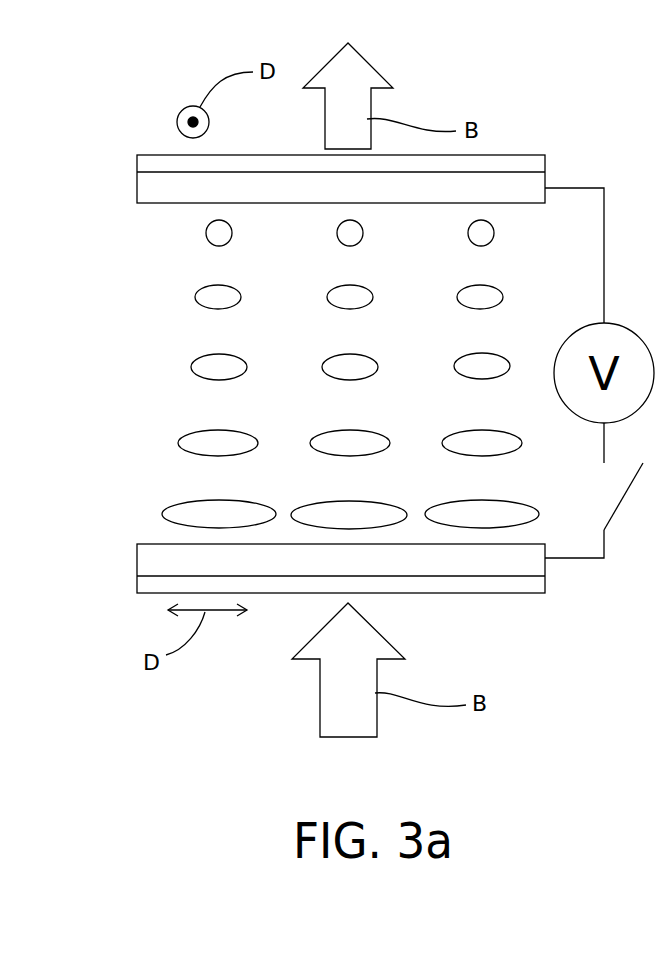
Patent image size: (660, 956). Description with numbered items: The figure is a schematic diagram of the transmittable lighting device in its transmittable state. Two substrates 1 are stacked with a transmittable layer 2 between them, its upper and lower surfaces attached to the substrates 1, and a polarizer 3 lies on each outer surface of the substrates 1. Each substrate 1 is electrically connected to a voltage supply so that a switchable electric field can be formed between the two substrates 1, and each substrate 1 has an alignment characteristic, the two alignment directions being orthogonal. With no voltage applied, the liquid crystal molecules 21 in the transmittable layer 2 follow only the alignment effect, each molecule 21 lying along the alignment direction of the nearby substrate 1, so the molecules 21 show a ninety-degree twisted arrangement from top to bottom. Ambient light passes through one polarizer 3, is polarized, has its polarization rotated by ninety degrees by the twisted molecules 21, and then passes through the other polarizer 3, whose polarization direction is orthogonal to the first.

The substrate 1 is at (158, 200).
The transmittable layer 2 is at (150, 242).
The polarizer 3 is at (152, 160).
The liquid crystal molecule 21 is at (483, 292).